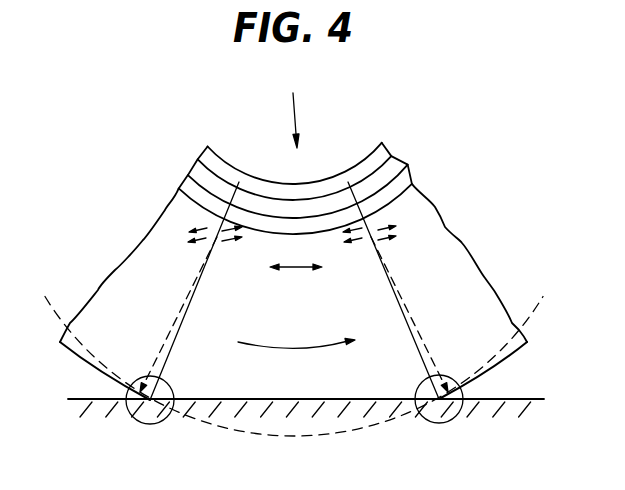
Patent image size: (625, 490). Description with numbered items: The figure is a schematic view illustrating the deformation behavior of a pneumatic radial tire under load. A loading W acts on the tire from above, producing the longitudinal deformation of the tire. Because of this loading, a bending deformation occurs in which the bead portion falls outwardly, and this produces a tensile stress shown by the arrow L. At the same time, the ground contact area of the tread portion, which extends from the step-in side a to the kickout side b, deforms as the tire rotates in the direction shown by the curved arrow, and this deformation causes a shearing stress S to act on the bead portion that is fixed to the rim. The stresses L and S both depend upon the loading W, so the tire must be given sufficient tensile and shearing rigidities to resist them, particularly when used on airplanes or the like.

The loading W is at (294, 107).
The shearing stress S is at (294, 246).
The tensile stress L is at (296, 255).
The step-in side a is at (150, 412).
The kickout side b is at (439, 411).